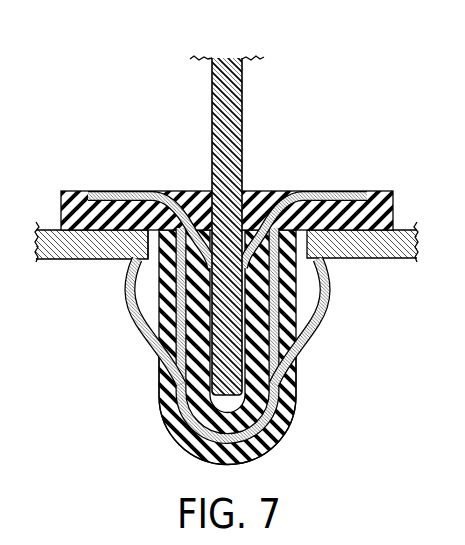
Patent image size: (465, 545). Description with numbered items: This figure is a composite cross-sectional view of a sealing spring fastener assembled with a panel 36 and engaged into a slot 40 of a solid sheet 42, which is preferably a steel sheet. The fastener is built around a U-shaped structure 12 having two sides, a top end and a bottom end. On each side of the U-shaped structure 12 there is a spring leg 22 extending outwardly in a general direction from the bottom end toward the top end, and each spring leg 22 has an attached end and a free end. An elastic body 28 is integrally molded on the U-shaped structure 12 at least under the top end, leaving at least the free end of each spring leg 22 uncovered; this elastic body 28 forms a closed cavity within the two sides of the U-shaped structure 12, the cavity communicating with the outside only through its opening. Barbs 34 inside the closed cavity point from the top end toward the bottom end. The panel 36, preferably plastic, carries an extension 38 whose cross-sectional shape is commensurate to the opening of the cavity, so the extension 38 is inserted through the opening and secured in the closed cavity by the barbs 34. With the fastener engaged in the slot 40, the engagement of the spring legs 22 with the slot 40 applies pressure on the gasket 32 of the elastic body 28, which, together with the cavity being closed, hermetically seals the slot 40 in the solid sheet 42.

The U-shaped structure 12 is at (182, 410).
The spring leg 22 is at (141, 323).
The elastic body 28 is at (286, 413).
The gasket 32 is at (388, 203).
The barbs 34 is at (262, 206).
The panel 36 is at (192, 115).
The extension 38 is at (236, 347).
The slot 40 is at (149, 252).
The solid sheet 42 is at (382, 248).